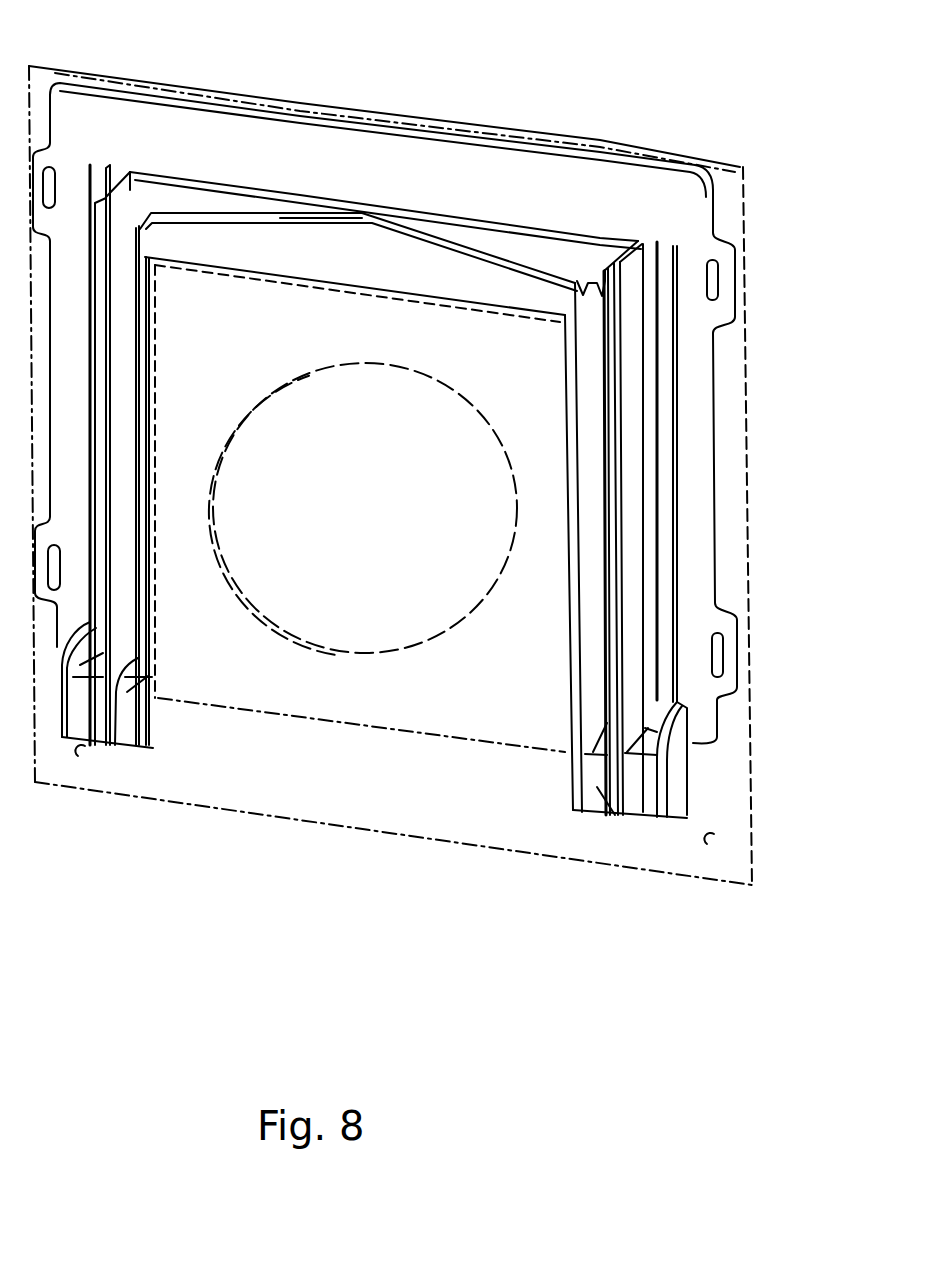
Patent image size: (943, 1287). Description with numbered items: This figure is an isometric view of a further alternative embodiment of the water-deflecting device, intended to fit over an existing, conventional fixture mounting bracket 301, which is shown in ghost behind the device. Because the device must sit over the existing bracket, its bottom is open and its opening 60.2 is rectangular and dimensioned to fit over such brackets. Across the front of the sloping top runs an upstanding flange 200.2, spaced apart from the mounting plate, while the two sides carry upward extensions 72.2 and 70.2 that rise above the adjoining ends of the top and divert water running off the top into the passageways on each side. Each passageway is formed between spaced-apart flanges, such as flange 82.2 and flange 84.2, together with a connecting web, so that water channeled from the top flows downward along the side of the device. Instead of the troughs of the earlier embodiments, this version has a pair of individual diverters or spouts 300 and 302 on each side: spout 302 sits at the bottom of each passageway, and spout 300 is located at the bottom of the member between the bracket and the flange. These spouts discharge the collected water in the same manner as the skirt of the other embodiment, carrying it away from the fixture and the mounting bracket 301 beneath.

The upward extension 72.2 is at (118, 197).
The upward extension 70.2 is at (638, 241).
The upstanding flange 200.2 is at (422, 235).
The fixture mounting bracket 301 is at (507, 423).
The opening 60.2 is at (462, 530).
The flange 82.2 is at (628, 542).
The flange 84.2 is at (587, 600).
The spout 300 is at (638, 788).
The spout 302 is at (622, 820).